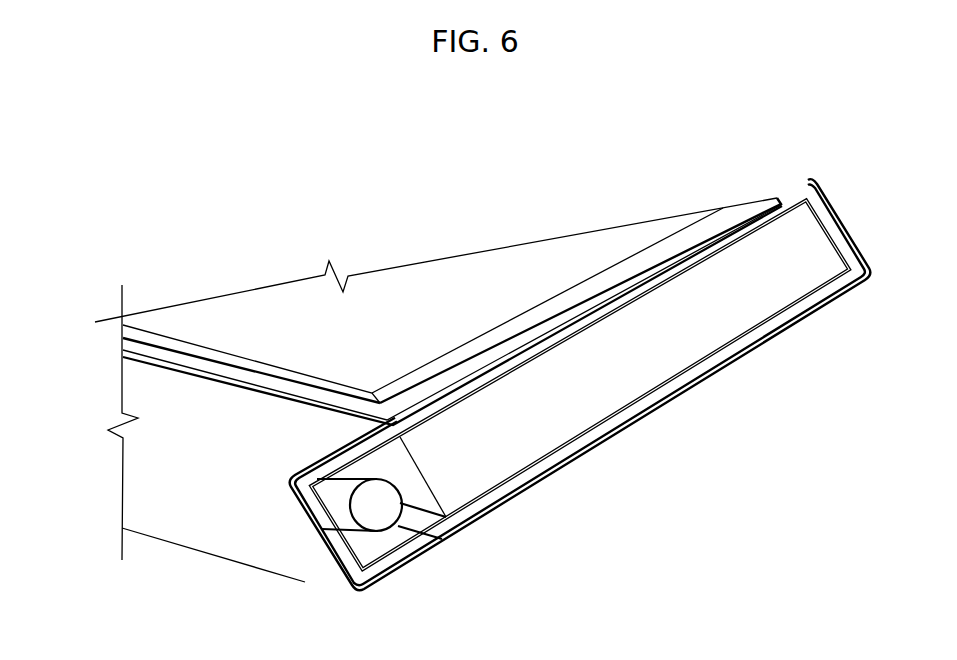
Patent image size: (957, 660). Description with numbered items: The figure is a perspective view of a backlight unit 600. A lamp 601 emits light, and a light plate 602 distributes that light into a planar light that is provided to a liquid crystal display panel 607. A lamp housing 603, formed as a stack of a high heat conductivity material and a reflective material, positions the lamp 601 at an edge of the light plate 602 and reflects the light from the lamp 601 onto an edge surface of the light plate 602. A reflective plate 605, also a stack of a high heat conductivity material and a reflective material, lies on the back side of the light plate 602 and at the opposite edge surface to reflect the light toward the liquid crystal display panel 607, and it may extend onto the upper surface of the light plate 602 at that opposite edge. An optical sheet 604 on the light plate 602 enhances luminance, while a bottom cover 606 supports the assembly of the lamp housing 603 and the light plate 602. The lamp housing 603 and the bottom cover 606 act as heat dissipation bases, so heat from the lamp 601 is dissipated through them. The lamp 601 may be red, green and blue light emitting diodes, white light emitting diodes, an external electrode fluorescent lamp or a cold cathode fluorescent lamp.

The backlight unit 600 is at (226, 186).
The lamp 601 is at (383, 517).
The light plate 602 is at (640, 375).
The lamp housing 603 is at (327, 533).
The optical sheet 604 is at (535, 342).
The reflective plate 605 is at (520, 478).
The bottom cover 606 is at (142, 385).
The liquid crystal display panel 607 is at (458, 270).